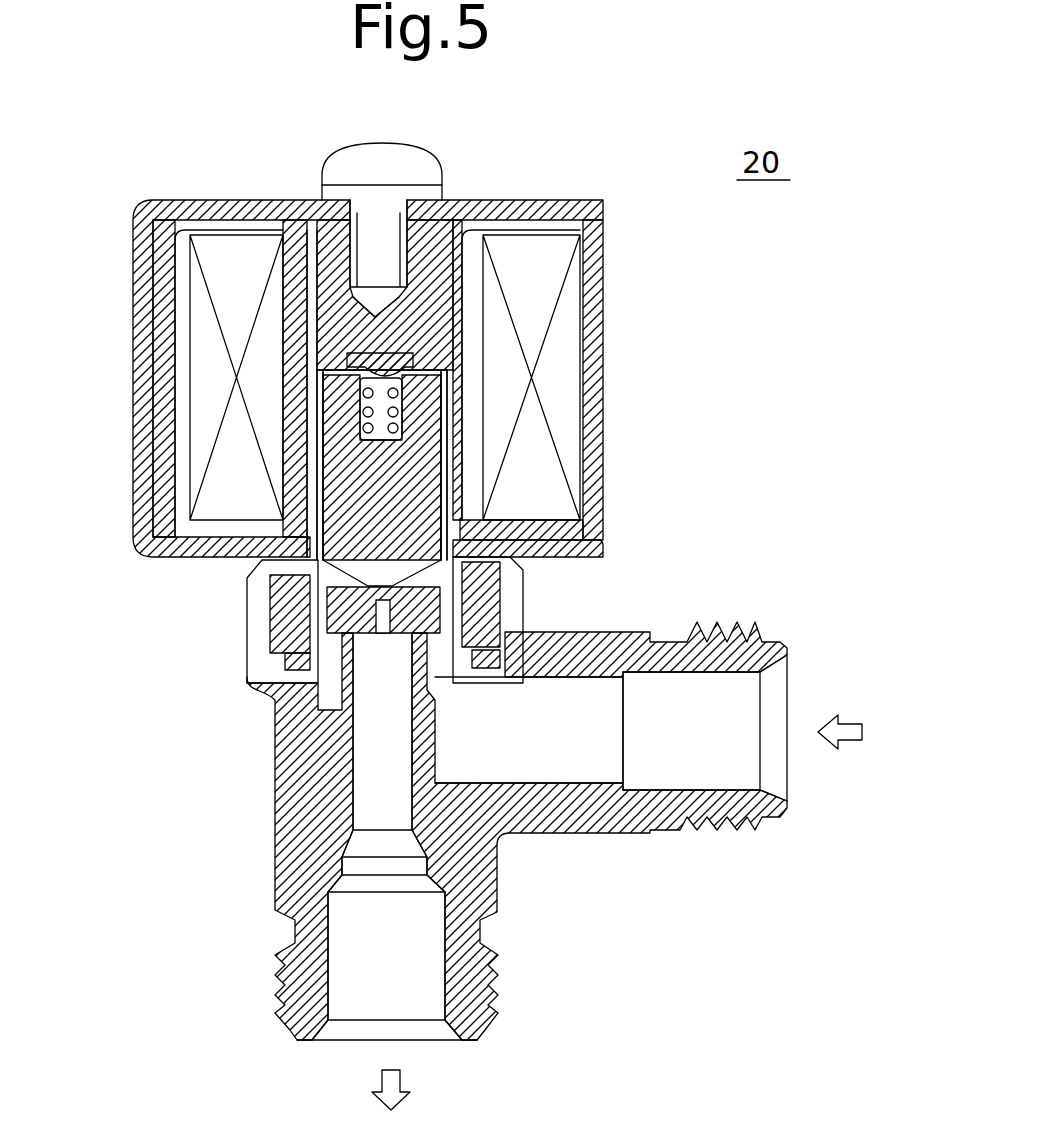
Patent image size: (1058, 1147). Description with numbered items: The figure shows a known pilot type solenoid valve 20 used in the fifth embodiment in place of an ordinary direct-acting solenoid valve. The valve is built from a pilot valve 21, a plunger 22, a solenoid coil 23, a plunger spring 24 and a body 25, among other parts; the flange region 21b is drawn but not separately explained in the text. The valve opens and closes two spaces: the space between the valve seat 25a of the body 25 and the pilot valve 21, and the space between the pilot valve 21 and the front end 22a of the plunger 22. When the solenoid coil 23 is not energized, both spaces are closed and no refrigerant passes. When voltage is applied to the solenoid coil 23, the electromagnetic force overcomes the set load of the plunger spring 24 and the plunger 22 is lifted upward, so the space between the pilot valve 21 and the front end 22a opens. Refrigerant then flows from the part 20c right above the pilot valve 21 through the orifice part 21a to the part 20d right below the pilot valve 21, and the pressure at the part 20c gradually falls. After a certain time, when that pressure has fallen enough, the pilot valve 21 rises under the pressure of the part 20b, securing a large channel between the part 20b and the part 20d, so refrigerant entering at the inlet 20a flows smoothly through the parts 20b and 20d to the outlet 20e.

The pilot type solenoid valve 20 is at (838, 662).
The inlet 20a is at (740, 695).
The part 20b is at (470, 727).
The part right above the pilot valve 20c is at (378, 585).
The part right below the pilot valve 20d is at (388, 660).
The outlet 20e is at (411, 1008).
The pilot valve 21 is at (340, 610).
The orifice part 21a is at (445, 610).
The sleeve flange 21b is at (420, 553).
The plunger 22 is at (428, 490).
The front end of the plunger 22a is at (383, 582).
The solenoid coil 23 is at (563, 350).
The plunger spring 24 is at (443, 387).
The body 25 is at (617, 642).
The valve seat 25a is at (283, 703).